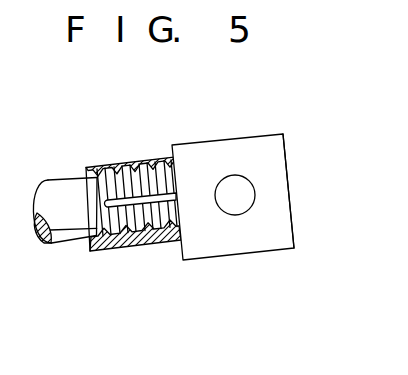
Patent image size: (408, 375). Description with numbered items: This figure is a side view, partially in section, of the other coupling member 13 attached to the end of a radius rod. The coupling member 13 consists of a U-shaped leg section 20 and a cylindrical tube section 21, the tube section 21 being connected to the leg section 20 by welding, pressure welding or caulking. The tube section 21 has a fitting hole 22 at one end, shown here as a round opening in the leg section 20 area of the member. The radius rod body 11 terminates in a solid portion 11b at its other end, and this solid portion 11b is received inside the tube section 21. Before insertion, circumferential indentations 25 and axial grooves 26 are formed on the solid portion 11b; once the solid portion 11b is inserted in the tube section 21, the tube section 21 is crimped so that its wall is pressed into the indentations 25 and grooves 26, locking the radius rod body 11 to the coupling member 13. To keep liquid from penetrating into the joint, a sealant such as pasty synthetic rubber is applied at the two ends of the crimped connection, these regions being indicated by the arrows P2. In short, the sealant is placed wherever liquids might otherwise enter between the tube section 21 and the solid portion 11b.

The radius rod body 11 is at (58, 193).
The solid portion 11b is at (75, 231).
The coupling member 13 is at (237, 139).
The U-shaped leg section 20 is at (290, 207).
The cylindrical tube section 21 is at (142, 243).
The fitting hole 22 is at (237, 214).
The circumferential indentations 25 is at (111, 242).
The axial grooves 26 is at (119, 198).
The arrow indicating sealant region P2 is at (88, 252).